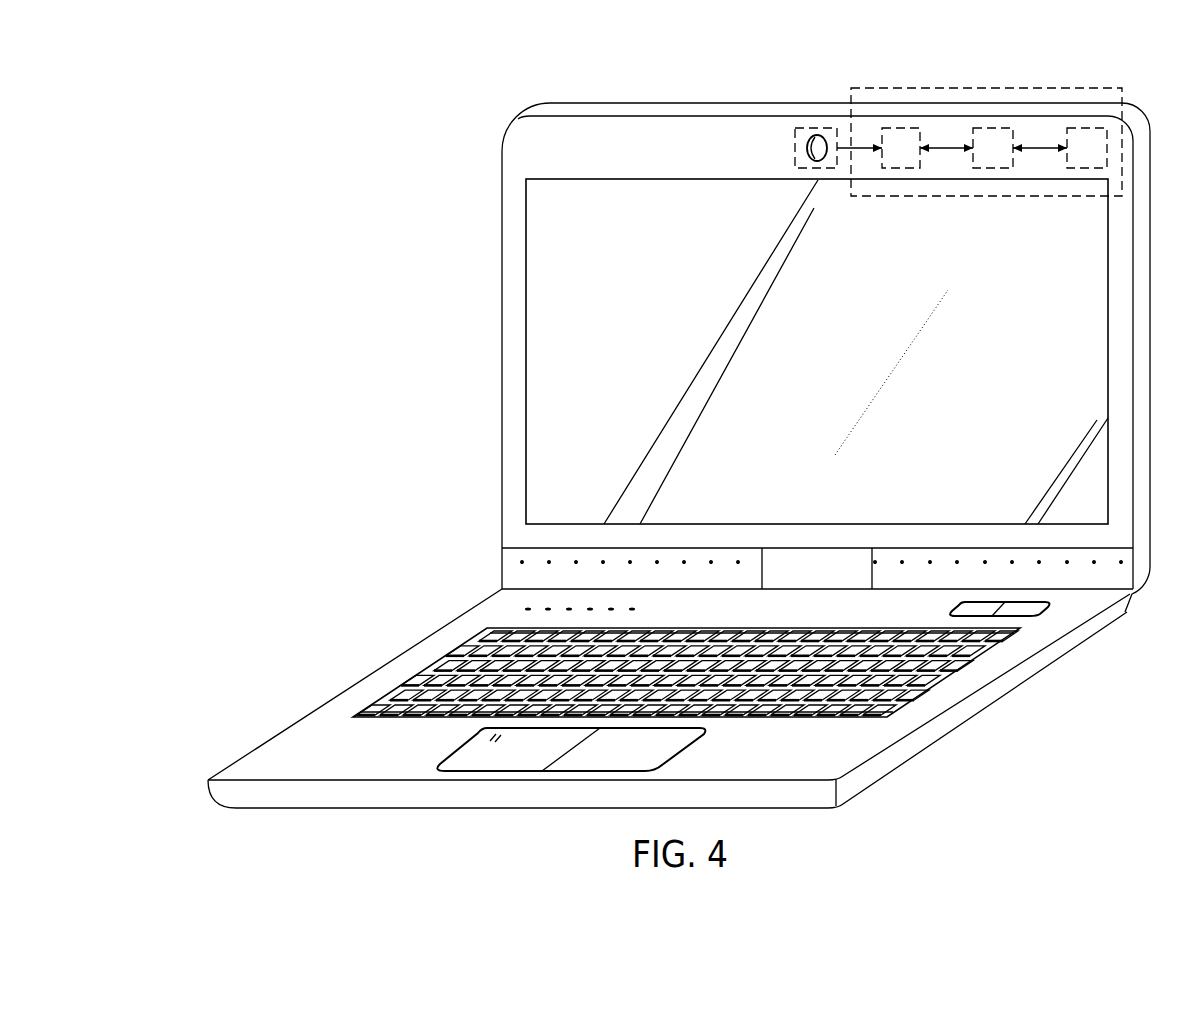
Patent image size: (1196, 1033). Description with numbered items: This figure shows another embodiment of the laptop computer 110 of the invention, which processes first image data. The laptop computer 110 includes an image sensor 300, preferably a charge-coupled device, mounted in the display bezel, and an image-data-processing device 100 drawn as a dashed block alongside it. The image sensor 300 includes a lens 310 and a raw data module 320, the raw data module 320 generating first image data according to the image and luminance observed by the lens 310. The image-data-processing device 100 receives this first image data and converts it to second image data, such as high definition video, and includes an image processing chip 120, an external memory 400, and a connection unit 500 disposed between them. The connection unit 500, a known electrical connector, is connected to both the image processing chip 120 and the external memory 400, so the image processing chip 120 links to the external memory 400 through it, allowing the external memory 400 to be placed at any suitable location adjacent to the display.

The image-data-processing device 100 is at (1123, 140).
The laptop computer 110 is at (307, 249).
The image processing chip 120 is at (900, 127).
The image sensor 300 is at (797, 67).
The lens 310 is at (821, 134).
The raw data module 320 is at (795, 146).
The external memory 400 is at (1087, 127).
The connection unit 500 is at (993, 127).